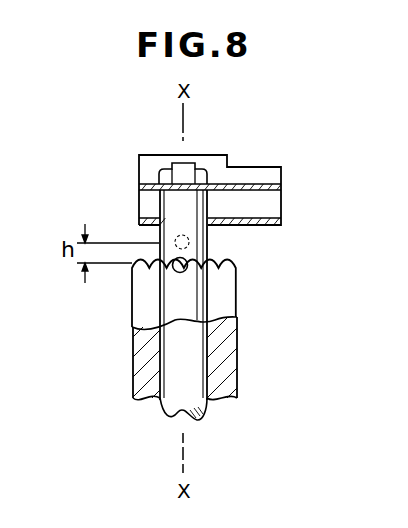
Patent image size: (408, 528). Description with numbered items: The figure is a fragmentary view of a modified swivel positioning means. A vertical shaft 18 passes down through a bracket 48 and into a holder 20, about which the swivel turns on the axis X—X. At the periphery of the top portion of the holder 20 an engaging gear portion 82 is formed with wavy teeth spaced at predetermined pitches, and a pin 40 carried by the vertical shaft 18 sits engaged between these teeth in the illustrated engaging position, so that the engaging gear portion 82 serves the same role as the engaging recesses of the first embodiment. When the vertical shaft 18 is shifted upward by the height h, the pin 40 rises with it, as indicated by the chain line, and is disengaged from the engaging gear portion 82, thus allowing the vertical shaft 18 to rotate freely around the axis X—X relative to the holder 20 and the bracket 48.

The frame bracket 48 is at (260, 226).
The engaging gear portion 82 is at (231, 264).
The pin 40 is at (186, 270).
The vertical shaft 18 is at (197, 371).
The holder 20 is at (142, 370).